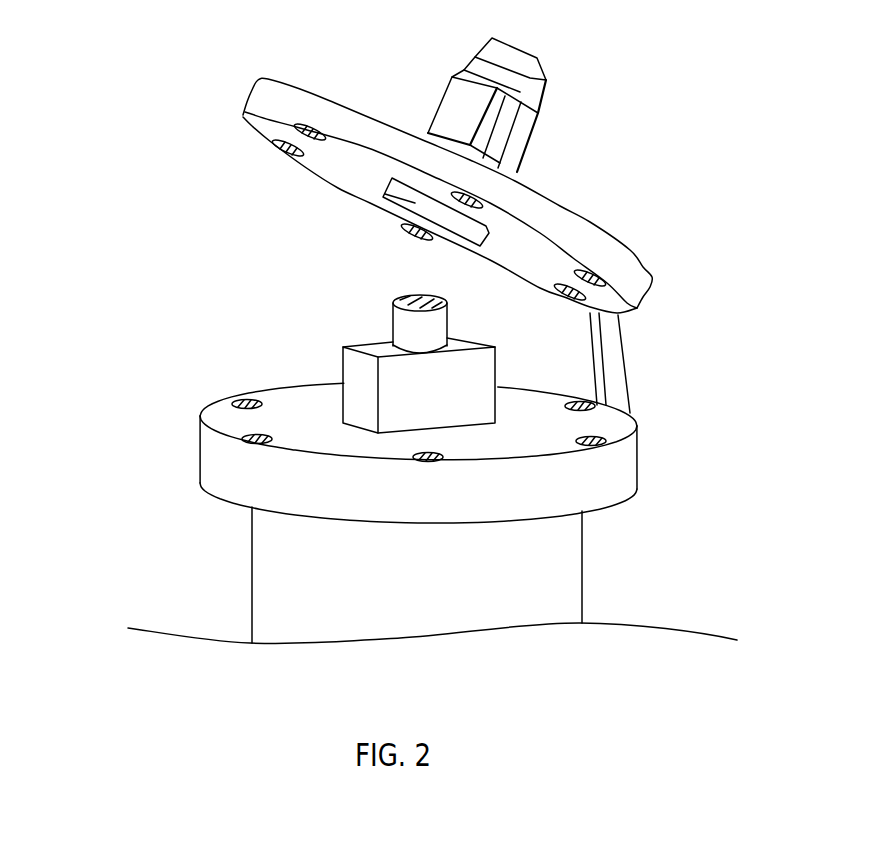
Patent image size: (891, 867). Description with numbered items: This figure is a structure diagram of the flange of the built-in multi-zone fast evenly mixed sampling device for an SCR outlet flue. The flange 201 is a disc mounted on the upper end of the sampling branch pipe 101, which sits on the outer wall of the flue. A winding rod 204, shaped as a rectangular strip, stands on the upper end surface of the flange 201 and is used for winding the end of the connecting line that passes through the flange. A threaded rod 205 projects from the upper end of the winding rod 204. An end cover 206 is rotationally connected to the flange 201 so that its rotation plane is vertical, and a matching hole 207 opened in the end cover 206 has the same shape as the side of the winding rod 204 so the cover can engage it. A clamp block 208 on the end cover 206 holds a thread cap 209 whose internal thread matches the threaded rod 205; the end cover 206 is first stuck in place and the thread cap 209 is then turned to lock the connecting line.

The sampling branch pipe 101 is at (273, 587).
The flange 201 is at (232, 467).
The winding rod 204 is at (353, 388).
The threaded rod 205 is at (413, 318).
The end cover 206 is at (602, 258).
The matching hole 207 is at (387, 180).
The clamp block 208 is at (442, 125).
The thread cap 209 is at (515, 72).